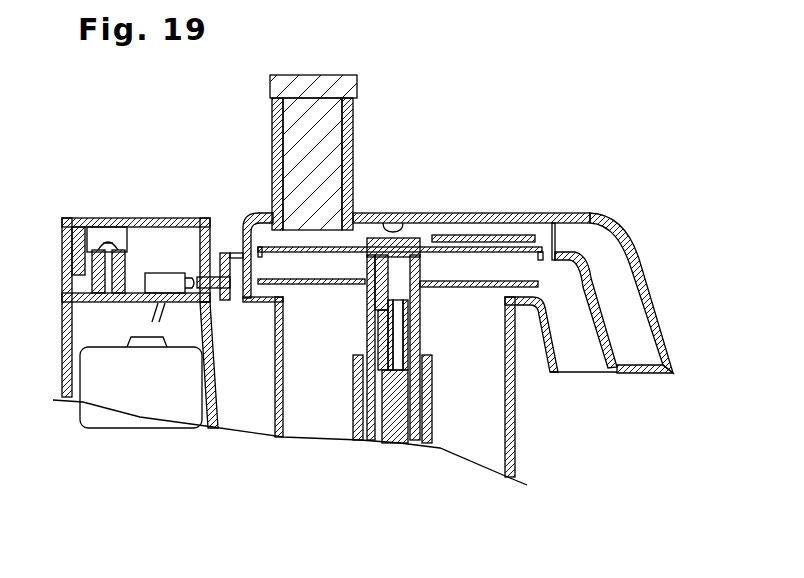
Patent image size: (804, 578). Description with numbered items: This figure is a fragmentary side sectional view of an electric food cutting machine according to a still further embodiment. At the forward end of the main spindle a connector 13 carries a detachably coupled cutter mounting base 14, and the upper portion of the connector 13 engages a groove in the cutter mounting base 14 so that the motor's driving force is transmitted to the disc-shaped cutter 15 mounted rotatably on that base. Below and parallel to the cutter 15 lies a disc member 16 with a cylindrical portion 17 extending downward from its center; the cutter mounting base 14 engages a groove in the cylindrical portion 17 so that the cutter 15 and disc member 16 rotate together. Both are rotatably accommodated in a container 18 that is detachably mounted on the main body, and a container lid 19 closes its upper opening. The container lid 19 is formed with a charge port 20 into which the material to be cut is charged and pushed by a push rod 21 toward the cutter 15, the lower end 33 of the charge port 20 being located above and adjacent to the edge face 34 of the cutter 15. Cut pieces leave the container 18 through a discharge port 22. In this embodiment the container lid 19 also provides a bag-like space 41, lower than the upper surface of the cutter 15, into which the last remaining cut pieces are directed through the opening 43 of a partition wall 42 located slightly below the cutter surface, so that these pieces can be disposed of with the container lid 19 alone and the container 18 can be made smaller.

The connector 13 is at (400, 390).
The cutter mounting base 14 is at (397, 245).
The cutter 15 is at (472, 250).
The disc member 16 is at (483, 290).
The cylindrical portion 17 is at (421, 295).
The container 18 is at (510, 462).
The container lid 19 is at (550, 215).
The charge port 20 is at (352, 122).
The push rod 21 is at (333, 87).
The discharge port 22 is at (590, 362).
The lower end of the charge port 33 is at (310, 232).
The edge face of the cutter 34 is at (505, 235).
The space 41 is at (643, 330).
The partition wall 42 is at (602, 305).
The opening 43 is at (555, 237).